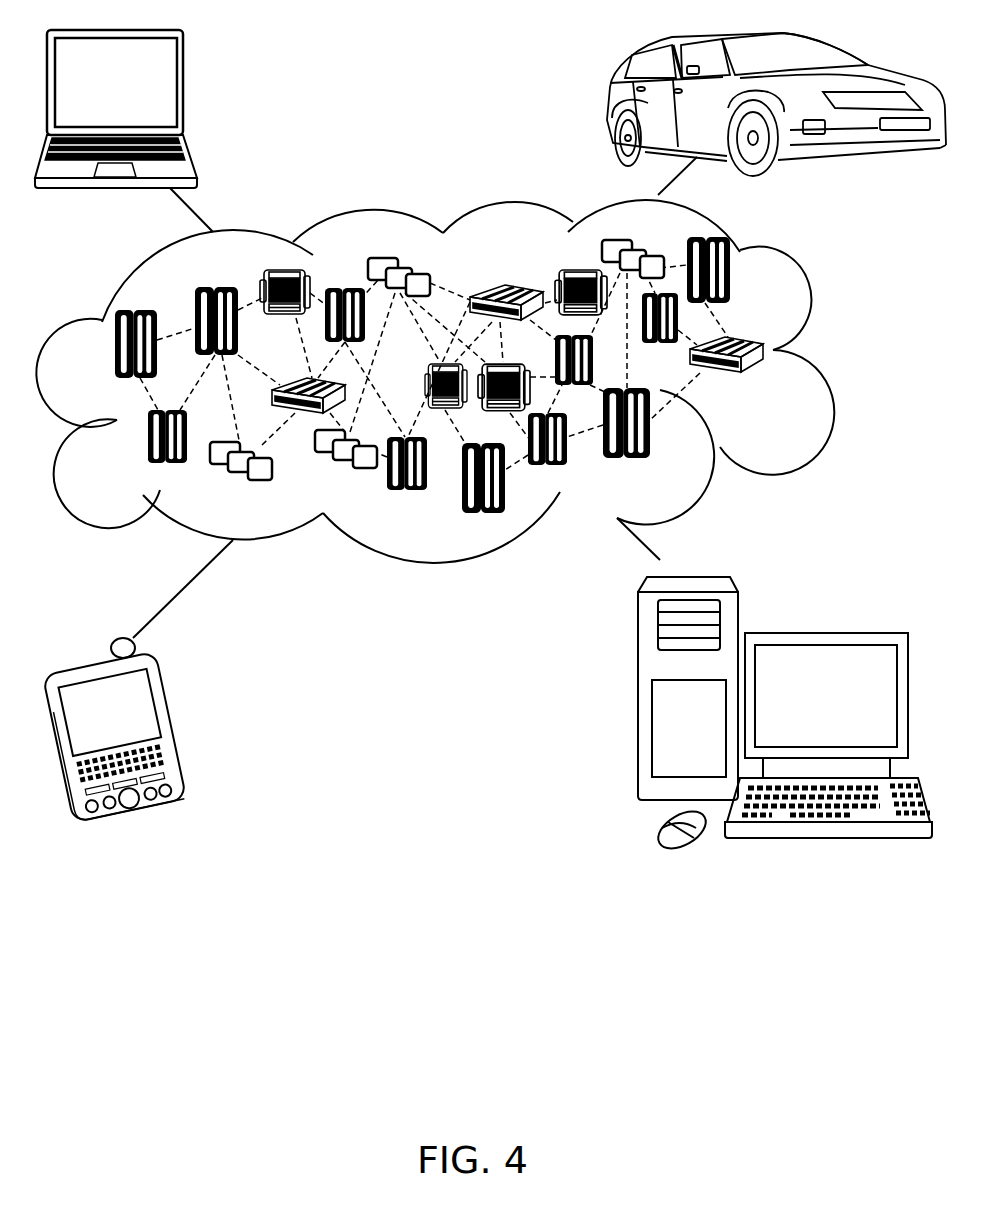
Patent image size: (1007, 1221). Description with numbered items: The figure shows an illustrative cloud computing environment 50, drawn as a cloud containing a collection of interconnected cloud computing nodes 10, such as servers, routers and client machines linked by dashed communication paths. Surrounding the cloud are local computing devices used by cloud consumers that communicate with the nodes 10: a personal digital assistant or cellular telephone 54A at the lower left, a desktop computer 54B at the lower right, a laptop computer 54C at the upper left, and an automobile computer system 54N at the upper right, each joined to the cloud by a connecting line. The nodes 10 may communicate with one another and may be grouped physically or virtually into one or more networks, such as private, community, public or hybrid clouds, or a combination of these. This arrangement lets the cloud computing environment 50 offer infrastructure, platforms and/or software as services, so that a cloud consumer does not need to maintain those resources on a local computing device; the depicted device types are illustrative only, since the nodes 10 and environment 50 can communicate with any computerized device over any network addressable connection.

The laptop computer 54C is at (184, 89).
The automobile computer system 54N is at (612, 104).
The personal digital assistant or cellular telephone 54A is at (172, 723).
The desktop computer 54B is at (823, 633).
The cloud computing environment 50 is at (823, 362).
The cloud computing nodes 10 is at (770, 383).